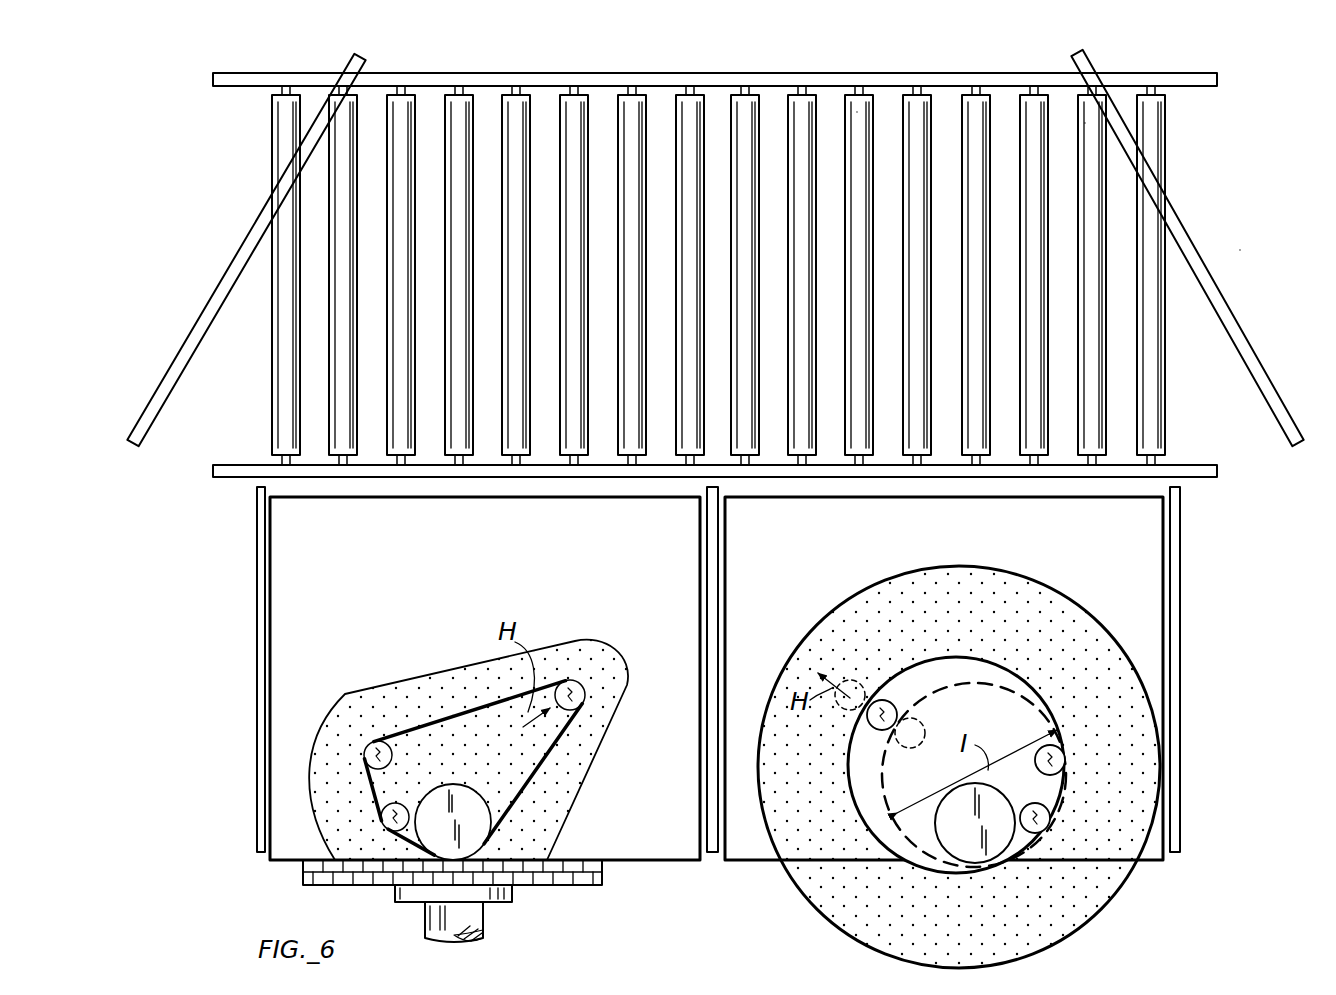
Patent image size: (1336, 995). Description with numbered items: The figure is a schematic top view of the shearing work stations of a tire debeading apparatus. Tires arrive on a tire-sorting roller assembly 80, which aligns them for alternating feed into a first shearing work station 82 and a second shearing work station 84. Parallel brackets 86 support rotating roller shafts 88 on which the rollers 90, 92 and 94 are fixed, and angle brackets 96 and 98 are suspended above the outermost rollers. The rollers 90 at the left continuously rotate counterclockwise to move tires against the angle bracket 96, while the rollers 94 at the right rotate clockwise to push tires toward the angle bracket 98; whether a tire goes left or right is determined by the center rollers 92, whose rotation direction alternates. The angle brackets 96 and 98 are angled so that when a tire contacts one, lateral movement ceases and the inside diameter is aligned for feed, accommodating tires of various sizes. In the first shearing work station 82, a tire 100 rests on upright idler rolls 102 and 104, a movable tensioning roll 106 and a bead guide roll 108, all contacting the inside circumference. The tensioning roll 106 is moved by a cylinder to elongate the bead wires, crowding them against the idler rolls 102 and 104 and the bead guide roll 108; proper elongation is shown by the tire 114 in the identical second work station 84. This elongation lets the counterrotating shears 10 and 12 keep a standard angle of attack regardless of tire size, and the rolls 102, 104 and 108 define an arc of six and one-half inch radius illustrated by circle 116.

The counterrotating shear 10 is at (303, 866).
The counterrotating shear 12 is at (560, 878).
The tire-sorting roller assembly 80 is at (1246, 249).
The first shearing work station 82 is at (1195, 631).
The second shearing work station 84 is at (217, 632).
The parallel brackets 86 is at (1190, 86).
The roller shafts 88 is at (748, 86).
The rollers 90 is at (401, 117).
The center rollers 92 is at (800, 108).
The rollers 94 is at (1085, 123).
The angle bracket 96 is at (193, 332).
The angle bracket 98 is at (1253, 368).
The tire 100 is at (1150, 770).
The upright idler roll 102 is at (372, 742).
The upright idler roll 104 is at (400, 806).
The movable tensioning roll 106 is at (580, 688).
The bead guide roll 108 is at (483, 830).
The tire 114 is at (455, 690).
The circle 116 is at (1038, 696).